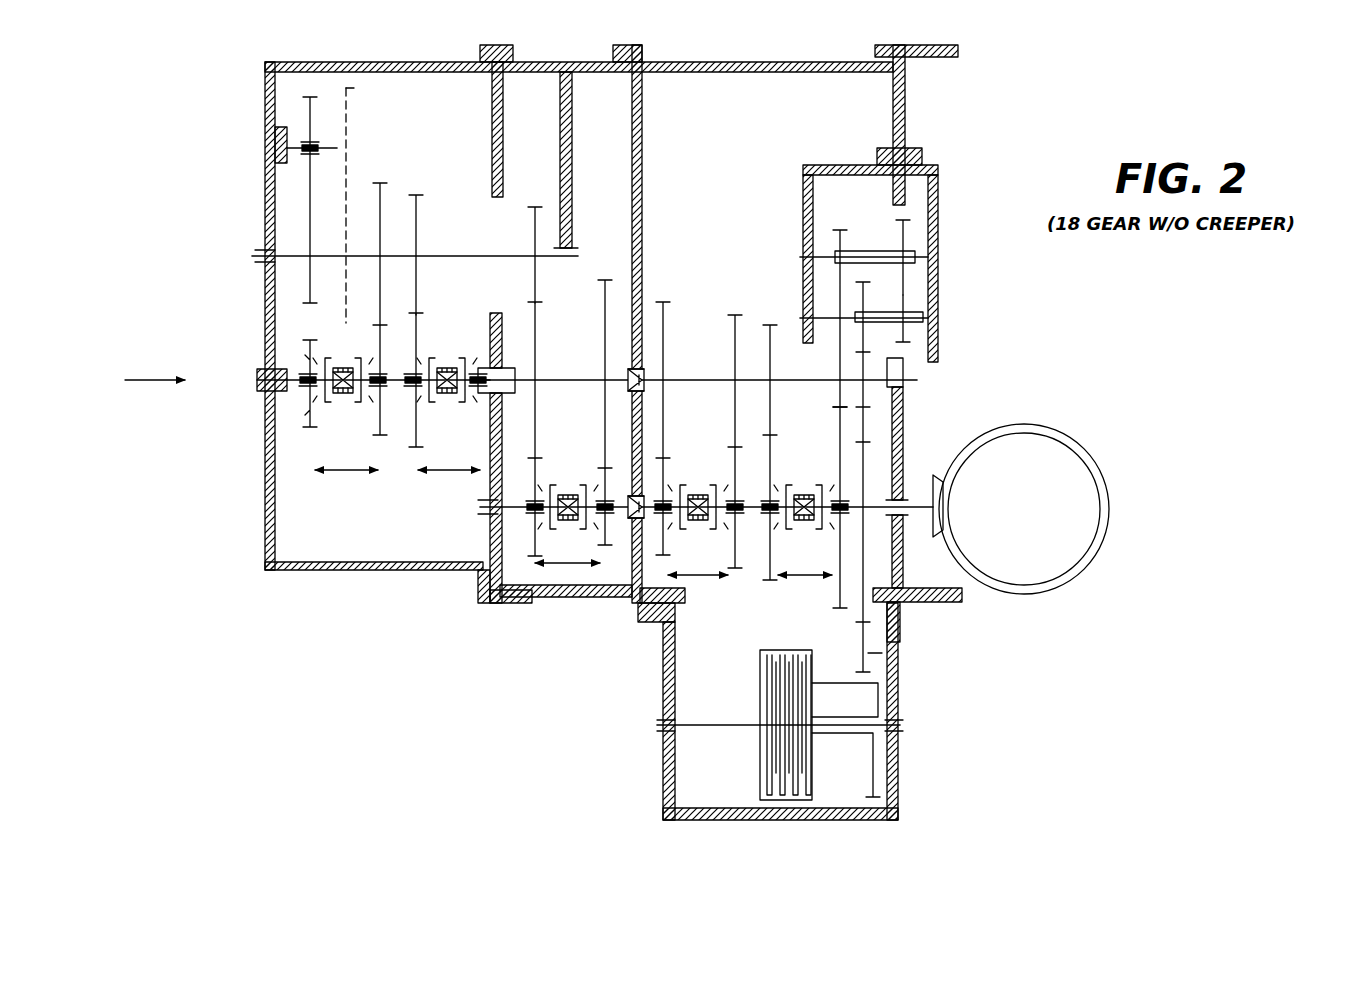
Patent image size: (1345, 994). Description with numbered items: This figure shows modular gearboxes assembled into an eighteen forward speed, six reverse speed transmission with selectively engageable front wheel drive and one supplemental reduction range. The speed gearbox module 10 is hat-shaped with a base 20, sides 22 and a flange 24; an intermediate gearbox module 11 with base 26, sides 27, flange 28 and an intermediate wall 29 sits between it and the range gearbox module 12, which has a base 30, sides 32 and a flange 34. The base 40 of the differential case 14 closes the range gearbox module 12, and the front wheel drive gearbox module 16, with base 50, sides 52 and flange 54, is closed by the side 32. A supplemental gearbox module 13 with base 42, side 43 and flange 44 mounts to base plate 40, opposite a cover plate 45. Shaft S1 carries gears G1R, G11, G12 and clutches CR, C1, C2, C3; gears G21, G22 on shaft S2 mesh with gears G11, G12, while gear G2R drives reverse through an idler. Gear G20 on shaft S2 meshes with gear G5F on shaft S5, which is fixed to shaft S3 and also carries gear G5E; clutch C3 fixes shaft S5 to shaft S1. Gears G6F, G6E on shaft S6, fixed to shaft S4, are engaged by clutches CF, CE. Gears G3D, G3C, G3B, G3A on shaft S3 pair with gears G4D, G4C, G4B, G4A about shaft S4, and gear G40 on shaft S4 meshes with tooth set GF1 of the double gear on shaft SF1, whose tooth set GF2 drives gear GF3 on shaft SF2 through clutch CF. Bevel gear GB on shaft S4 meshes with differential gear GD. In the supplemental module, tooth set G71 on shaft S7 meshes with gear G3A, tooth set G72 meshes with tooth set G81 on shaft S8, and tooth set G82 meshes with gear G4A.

The speed gearbox module 10 is at (250, 601).
The intermediate gearbox module 11 is at (585, 52).
The range gearbox module 12 is at (772, 52).
The supplemental gearbox module 13 is at (805, 155).
The differential case 14 is at (990, 70).
The front wheel drive gearbox module 16 is at (645, 810).
The base 20 is at (265, 486).
The sides 22 is at (305, 62).
The flange 24 is at (480, 52).
The base 26 is at (492, 110).
The sides 27 is at (535, 72).
The flange 28 is at (603, 72).
The intermediate wall 29 is at (572, 132).
The base 30 is at (642, 108).
The sides 32 is at (632, 600).
The flange 34 is at (875, 52).
The base 40 is at (905, 98).
The base 42 is at (803, 209).
The side 43 is at (862, 165).
The flange 44 is at (880, 152).
The cover plate 45 is at (938, 190).
The base 50 is at (740, 808).
The sides 52 is at (663, 770).
The flange 54 is at (655, 622).
The shaft S1 is at (257, 376).
The shaft S2 is at (258, 254).
The shaft S3 is at (917, 382).
The shaft S4 is at (888, 500).
The shaft S5 is at (585, 378).
The shaft S6 is at (490, 515).
The shaft S7 is at (928, 318).
The shaft S8 is at (918, 258).
The shaft SF1 is at (900, 634).
The shaft SF2 is at (905, 725).
The gear G1R is at (312, 113).
The gear G2R is at (310, 220).
The gear G11 is at (385, 445).
The gear G12 is at (413, 455).
The gear G21 is at (380, 180).
The gear G22 is at (416, 195).
The gear G20 is at (535, 226).
The gear G5F is at (535, 303).
The gear G5E is at (615, 270).
The gear G6F is at (535, 457).
The gear G6E is at (605, 468).
The gear G3D is at (665, 300).
The gear G3C is at (740, 290).
The gear G3B is at (772, 323).
The gear G3A is at (866, 397).
The gear G4D is at (665, 552).
The gear G4C is at (740, 572).
The gear G4B is at (770, 585).
The gear G4A is at (840, 590).
The gear G40 is at (887, 552).
The gear tooth set G71 is at (858, 340).
The gear tooth set G72 is at (920, 340).
The gear tooth set G81 is at (905, 282).
The gear tooth set G82 is at (850, 222).
The gear tooth set GF1 is at (858, 636).
The gear tooth set GF2 is at (900, 655).
The gear GF3 is at (862, 683).
The bevel gear GB is at (943, 500).
The differential gear GD is at (1090, 473).
The clutch C1 is at (350, 402).
The clutch C2 is at (448, 358).
The clutch C3 is at (455, 402).
The clutch CR is at (346, 323).
The clutch CE is at (567, 524).
The clutch CF is at (550, 530).